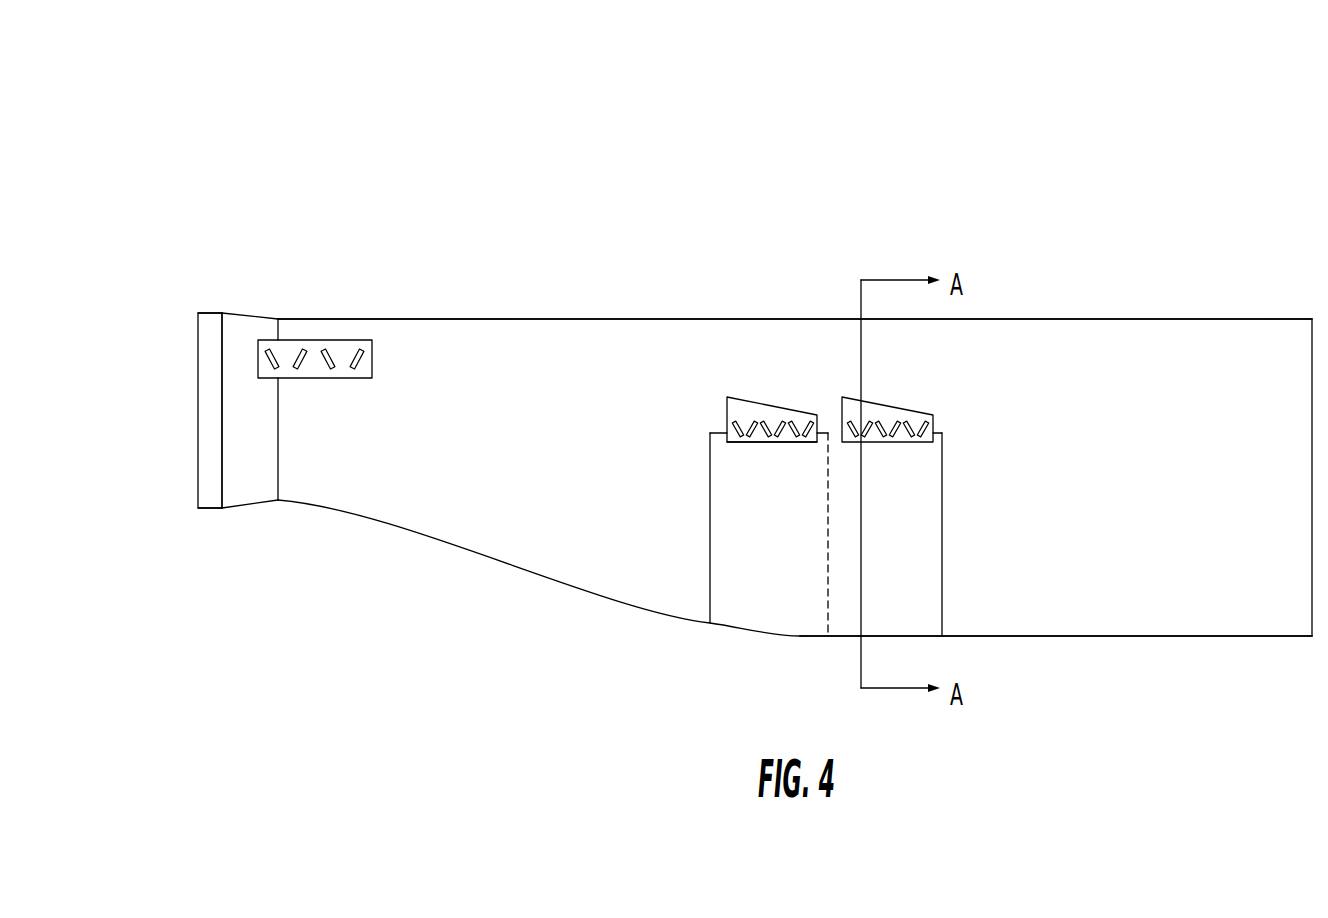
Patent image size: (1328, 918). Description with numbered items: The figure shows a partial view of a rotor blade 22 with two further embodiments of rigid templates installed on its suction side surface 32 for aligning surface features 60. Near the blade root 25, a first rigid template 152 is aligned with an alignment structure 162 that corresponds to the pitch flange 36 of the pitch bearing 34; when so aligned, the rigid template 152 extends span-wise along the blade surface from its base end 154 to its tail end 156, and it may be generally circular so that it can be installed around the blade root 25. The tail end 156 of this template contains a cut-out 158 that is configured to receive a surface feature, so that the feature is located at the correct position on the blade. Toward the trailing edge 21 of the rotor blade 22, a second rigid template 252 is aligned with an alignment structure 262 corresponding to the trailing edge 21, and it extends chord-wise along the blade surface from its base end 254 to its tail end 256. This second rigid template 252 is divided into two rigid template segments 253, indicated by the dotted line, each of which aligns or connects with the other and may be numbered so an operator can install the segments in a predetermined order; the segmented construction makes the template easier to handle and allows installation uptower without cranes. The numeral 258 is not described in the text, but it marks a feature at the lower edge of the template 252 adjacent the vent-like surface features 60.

The trailing edge 21 is at (1007, 637).
The rotor blade 22 is at (1145, 298).
The blade root 25 is at (185, 370).
The suction side surface 32 is at (615, 345).
The pitch bearing 34 is at (208, 522).
The pitch flange 36 is at (222, 493).
The surface features 60 is at (351, 318).
The rigid template 152 is at (259, 306).
The base end 154 is at (223, 417).
The tail end 156 is at (282, 395).
The cut-out 158 is at (263, 338).
The alignment structure 162 is at (204, 300).
The rigid template 252 is at (952, 492).
The rigid template segments 253 is at (722, 560).
The base end 254 is at (723, 616).
The tail end 256 is at (708, 450).
The block top wall 258 is at (757, 446).
The alignment structure 262 is at (799, 652).